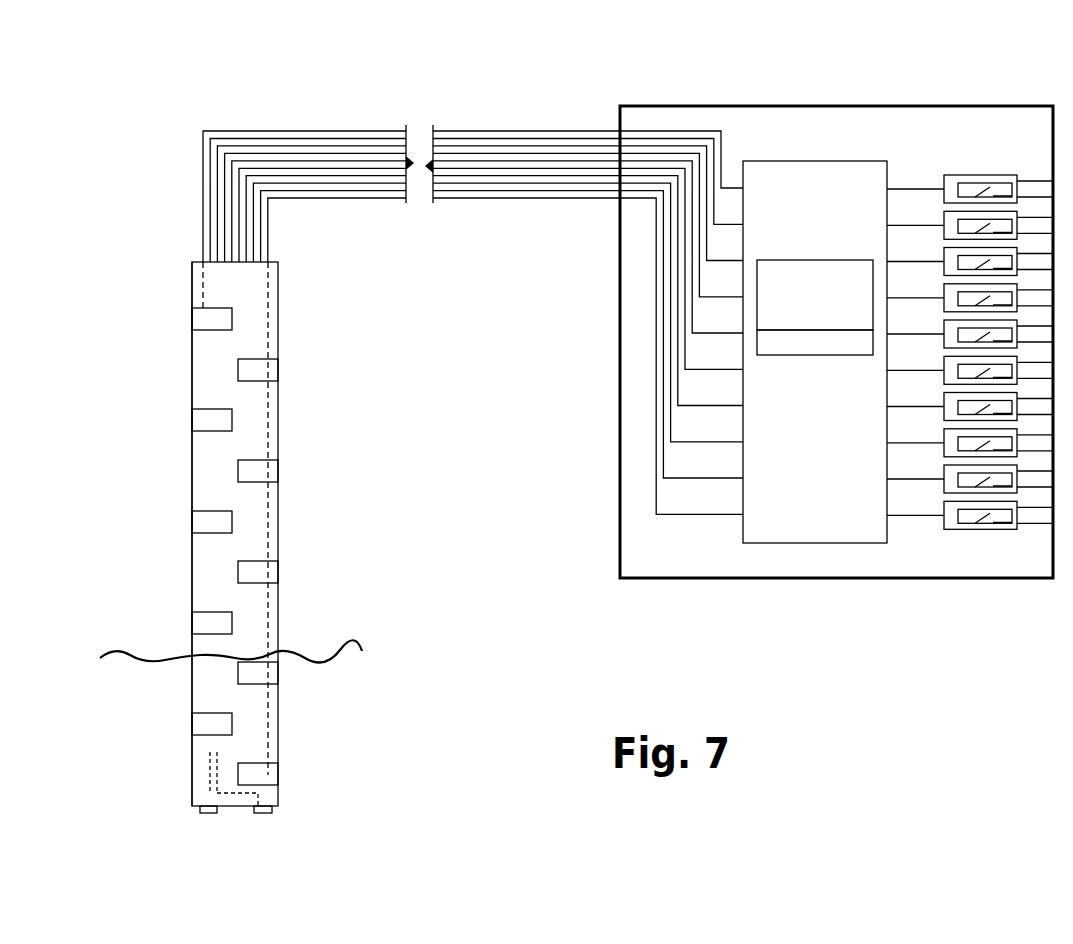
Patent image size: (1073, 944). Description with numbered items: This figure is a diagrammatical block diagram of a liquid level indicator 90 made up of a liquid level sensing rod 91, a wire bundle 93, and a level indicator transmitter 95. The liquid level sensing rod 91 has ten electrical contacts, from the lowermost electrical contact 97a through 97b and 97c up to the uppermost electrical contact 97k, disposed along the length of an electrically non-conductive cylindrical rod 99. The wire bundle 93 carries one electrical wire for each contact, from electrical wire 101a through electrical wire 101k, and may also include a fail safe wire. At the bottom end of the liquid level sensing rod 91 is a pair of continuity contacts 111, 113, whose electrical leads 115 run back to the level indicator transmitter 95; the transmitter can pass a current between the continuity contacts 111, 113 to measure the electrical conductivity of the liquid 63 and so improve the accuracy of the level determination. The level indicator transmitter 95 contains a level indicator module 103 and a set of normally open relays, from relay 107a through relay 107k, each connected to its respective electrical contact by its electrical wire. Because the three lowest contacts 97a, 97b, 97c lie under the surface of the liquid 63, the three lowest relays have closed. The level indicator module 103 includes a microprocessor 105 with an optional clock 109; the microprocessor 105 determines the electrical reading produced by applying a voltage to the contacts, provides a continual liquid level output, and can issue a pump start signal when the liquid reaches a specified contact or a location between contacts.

The liquid level indicator 90 is at (567, 651).
The liquid level sensing rod 91 is at (282, 418).
The wire bundle 93 is at (318, 128).
The level indicator transmitter 95 is at (812, 104).
The electrical contact 97a is at (272, 781).
The electrical contact 97b is at (200, 720).
The electrical contact 97c is at (272, 672).
The electrical contact 97k is at (197, 324).
The electrically non-conductive cylindrical rod 99 is at (192, 472).
The electrical wire 101a is at (487, 200).
The electrical wire 101k is at (527, 129).
The level indicator module 103 is at (887, 161).
The microprocessor 105 is at (830, 260).
The relay 107a is at (975, 530).
The relay 107k is at (975, 175).
The clock 109 is at (830, 355).
The continuity contact 111 is at (206, 814).
The continuity contact 113 is at (256, 814).
The electrical leads 115 is at (200, 778).
The liquid 63 is at (148, 655).